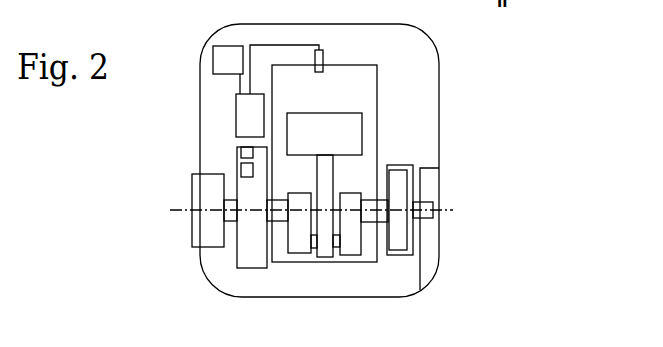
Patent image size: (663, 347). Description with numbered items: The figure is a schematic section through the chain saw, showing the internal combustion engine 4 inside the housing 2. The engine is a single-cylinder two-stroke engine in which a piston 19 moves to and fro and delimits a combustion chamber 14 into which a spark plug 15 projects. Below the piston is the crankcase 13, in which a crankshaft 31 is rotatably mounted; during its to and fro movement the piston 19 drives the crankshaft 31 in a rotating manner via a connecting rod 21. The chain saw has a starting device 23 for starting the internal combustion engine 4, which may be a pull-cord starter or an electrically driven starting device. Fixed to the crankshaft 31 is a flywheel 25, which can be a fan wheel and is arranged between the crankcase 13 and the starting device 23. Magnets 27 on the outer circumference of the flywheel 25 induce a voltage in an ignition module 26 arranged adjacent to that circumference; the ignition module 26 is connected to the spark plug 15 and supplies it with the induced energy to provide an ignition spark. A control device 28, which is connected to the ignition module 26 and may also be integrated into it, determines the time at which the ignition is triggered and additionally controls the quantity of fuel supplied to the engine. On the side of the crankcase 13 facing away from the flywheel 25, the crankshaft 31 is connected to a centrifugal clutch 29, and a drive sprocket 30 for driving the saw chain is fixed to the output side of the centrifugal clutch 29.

The housing 2 is at (435, 42).
The internal combustion engine 4 is at (277, 271).
The crankcase 13 is at (343, 262).
The combustion chamber 14 is at (342, 90).
The spark plug 15 is at (322, 60).
The piston 19 is at (353, 133).
The connecting rod 21 is at (322, 237).
The starting device 23 is at (200, 230).
The flywheel 25 is at (237, 255).
The ignition module 26 is at (243, 120).
The magnets 27 is at (241, 168).
The control device 28 is at (220, 61).
The centrifugal clutch 29 is at (404, 258).
The drive sprocket 30 is at (428, 217).
The crankshaft 31 is at (368, 215).